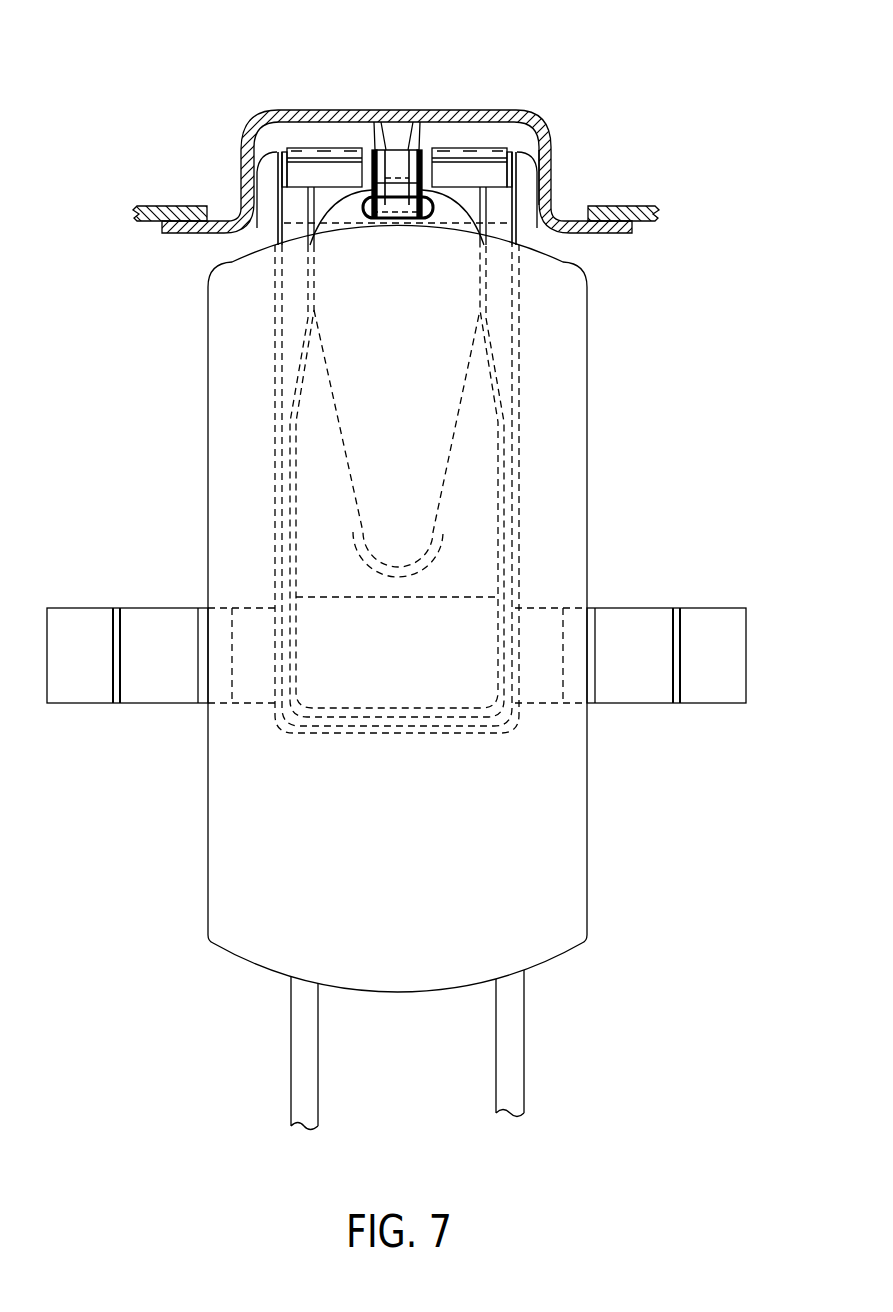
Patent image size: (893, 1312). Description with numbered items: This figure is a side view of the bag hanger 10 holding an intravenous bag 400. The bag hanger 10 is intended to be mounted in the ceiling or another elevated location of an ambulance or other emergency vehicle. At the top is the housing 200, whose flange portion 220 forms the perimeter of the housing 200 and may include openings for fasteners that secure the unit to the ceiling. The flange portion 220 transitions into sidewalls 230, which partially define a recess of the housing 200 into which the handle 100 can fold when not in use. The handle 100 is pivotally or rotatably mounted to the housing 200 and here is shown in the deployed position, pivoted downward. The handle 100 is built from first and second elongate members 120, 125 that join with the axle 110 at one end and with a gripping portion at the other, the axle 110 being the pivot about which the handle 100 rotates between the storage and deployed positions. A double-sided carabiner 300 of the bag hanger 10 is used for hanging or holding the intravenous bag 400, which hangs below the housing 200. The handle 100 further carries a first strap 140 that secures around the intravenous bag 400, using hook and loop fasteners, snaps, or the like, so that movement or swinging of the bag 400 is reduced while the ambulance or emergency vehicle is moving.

The bag hanger 10 is at (704, 78).
The handle 100 is at (508, 200).
The axle 110 is at (336, 173).
The first elongate member 120 is at (291, 218).
The second elongate member 125 is at (506, 223).
The first strap 140 is at (635, 706).
The housing 200 is at (507, 113).
The flange portion 220 is at (610, 234).
The sidewalls 230 is at (548, 193).
The double-sided carabiner 300 is at (402, 142).
The intravenous bag 400 is at (564, 868).